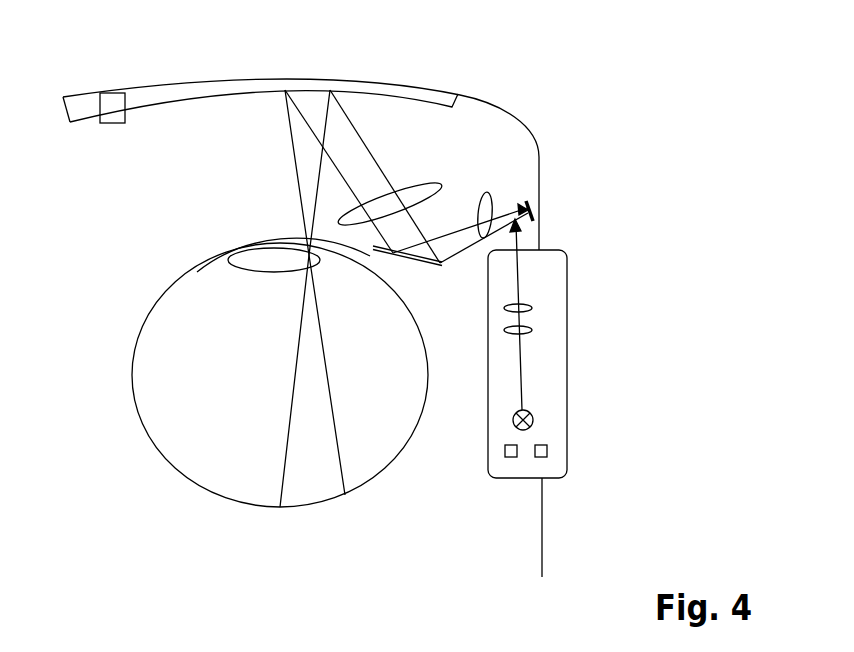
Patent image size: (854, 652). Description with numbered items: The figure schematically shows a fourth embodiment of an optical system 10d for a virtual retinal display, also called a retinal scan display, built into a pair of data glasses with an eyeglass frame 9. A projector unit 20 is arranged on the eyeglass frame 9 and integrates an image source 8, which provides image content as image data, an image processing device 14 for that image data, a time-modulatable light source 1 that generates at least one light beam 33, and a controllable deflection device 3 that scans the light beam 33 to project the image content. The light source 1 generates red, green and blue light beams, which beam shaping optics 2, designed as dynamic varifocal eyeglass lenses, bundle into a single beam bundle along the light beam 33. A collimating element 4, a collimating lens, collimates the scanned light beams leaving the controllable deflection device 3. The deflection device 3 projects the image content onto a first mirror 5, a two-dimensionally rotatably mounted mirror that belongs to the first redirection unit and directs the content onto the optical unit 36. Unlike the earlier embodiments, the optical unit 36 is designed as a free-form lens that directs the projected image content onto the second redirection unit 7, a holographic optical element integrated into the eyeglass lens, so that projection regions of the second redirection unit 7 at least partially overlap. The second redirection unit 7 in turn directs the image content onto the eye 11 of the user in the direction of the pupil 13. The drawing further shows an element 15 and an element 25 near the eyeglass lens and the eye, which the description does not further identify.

The time-modulatable light source 1 is at (533, 421).
The beam shaping optics 2 is at (532, 306).
The controllable deflection device 3 is at (533, 224).
The collimating element 4 is at (492, 201).
The first mirror 5 is at (427, 262).
The second redirection unit 7 is at (395, 85).
The image source 8 is at (510, 458).
The eyeglass frame 9 is at (543, 510).
The optical system 10d is at (653, 190).
The eye 11 is at (157, 365).
The pupil 13 is at (232, 254).
The image processing device 14 is at (548, 450).
The detector 15 is at (112, 106).
The projector unit 20 is at (567, 275).
The eye lens 25 is at (197, 272).
The light beam 33 is at (520, 362).
The optical unit 36 is at (397, 200).